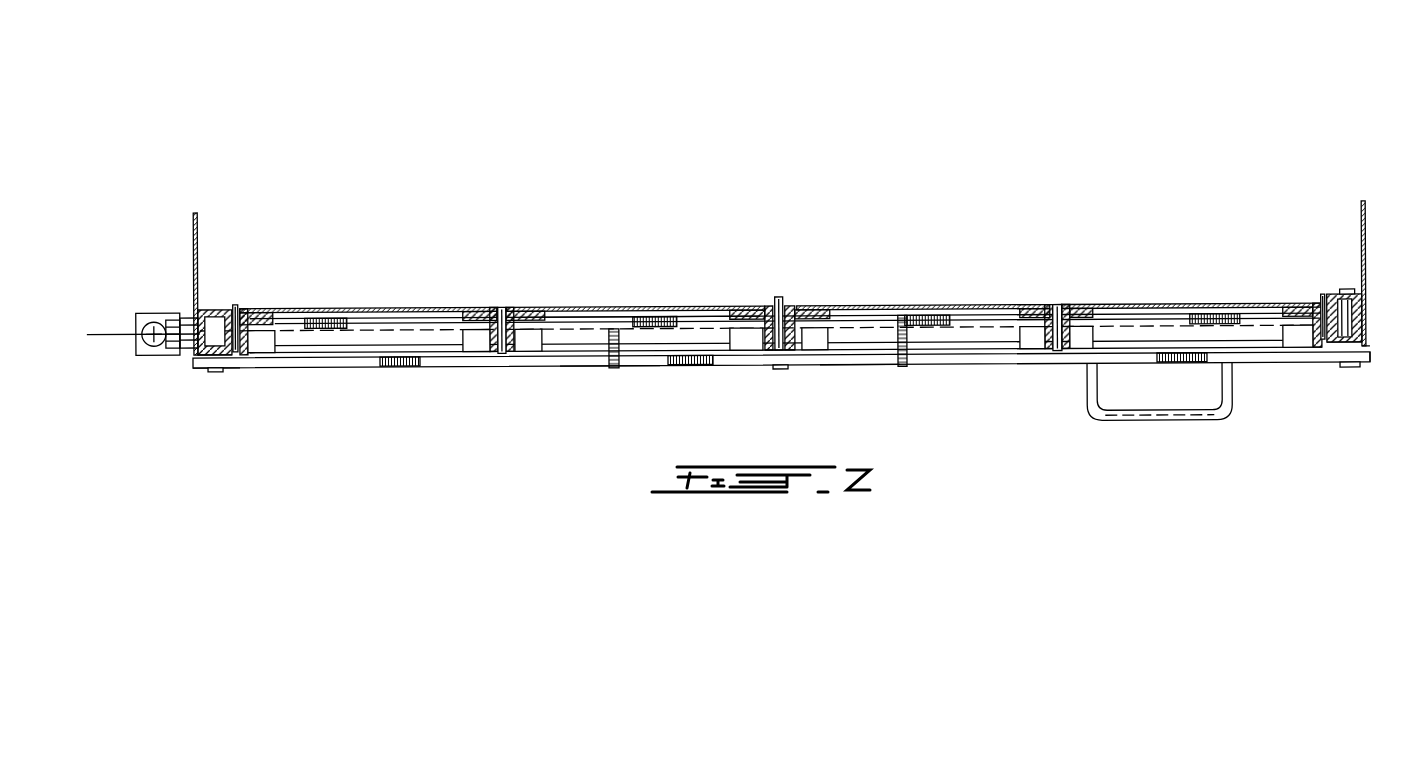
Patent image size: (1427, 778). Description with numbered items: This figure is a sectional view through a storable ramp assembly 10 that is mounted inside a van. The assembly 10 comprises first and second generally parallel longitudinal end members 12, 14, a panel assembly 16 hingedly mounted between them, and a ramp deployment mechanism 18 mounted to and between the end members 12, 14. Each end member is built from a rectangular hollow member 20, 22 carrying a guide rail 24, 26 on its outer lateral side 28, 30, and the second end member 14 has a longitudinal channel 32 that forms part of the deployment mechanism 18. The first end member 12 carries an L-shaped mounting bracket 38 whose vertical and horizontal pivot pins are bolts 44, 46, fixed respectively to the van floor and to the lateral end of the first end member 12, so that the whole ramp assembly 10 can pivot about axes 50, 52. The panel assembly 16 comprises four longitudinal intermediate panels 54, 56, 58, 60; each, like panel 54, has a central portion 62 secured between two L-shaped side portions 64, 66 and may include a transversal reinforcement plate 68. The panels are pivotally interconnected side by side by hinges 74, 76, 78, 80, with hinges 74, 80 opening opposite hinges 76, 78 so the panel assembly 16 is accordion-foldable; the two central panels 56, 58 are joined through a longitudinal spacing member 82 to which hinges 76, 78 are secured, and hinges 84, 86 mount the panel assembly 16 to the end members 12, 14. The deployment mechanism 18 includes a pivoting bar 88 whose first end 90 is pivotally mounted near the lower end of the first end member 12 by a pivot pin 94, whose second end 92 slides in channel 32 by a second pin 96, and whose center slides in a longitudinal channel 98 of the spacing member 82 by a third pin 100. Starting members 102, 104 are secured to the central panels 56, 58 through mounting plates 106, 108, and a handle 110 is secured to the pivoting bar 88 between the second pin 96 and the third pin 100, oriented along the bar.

The storable ramp assembly 10 is at (1037, 128).
The first longitudinal end member 12 is at (211, 300).
The second longitudinal end member 14 is at (1374, 325).
The panel assembly 16 is at (582, 290).
The ramp deployment mechanism 18 is at (598, 370).
The rectangular hollow member 20 is at (222, 354).
The rectangular hollow member 22 is at (1335, 352).
The guide rail 24 is at (194, 222).
The guide rail 26 is at (1366, 228).
The outer lateral side 28 is at (195, 322).
The outer lateral side 30 is at (1350, 316).
The longitudinal channel 32 is at (1360, 357).
The L-shaped mounting bracket 38 is at (165, 352).
The bolt 44 is at (152, 354).
The bolt 46 is at (170, 320).
The axis 50 is at (153, 322).
The axis 52 is at (97, 337).
The longitudinal intermediate panel 54 is at (350, 310).
The longitudinal intermediate panel 56 is at (646, 300).
The longitudinal intermediate panel 58 is at (872, 303).
The longitudinal intermediate panel 60 is at (1147, 300).
The central portion 62 is at (405, 310).
The L-shaped side portion 64 is at (263, 316).
The L-shaped side portion 66 is at (492, 310).
The transversal reinforcement plate 68 is at (358, 352).
The hinge 74 is at (500, 355).
The hinge 76 is at (770, 305).
The hinge 78 is at (795, 305).
The hinge 80 is at (1055, 354).
The longitudinal spacing member 82 is at (783, 300).
The hinge 84 is at (236, 308).
The hinge 86 is at (1318, 355).
The pivoting bar 88 is at (852, 366).
The first end 90 is at (200, 378).
The second end 92 is at (1378, 360).
The pivot pin 94 is at (215, 375).
The second pin 96 is at (1325, 318).
The longitudinal channel 98 is at (772, 356).
The third pin 100 is at (785, 356).
The starting member 102 is at (613, 372).
The starting member 104 is at (906, 370).
The mounting plate 106 is at (690, 332).
The mounting plate 108 is at (975, 320).
The handle 110 is at (1195, 425).